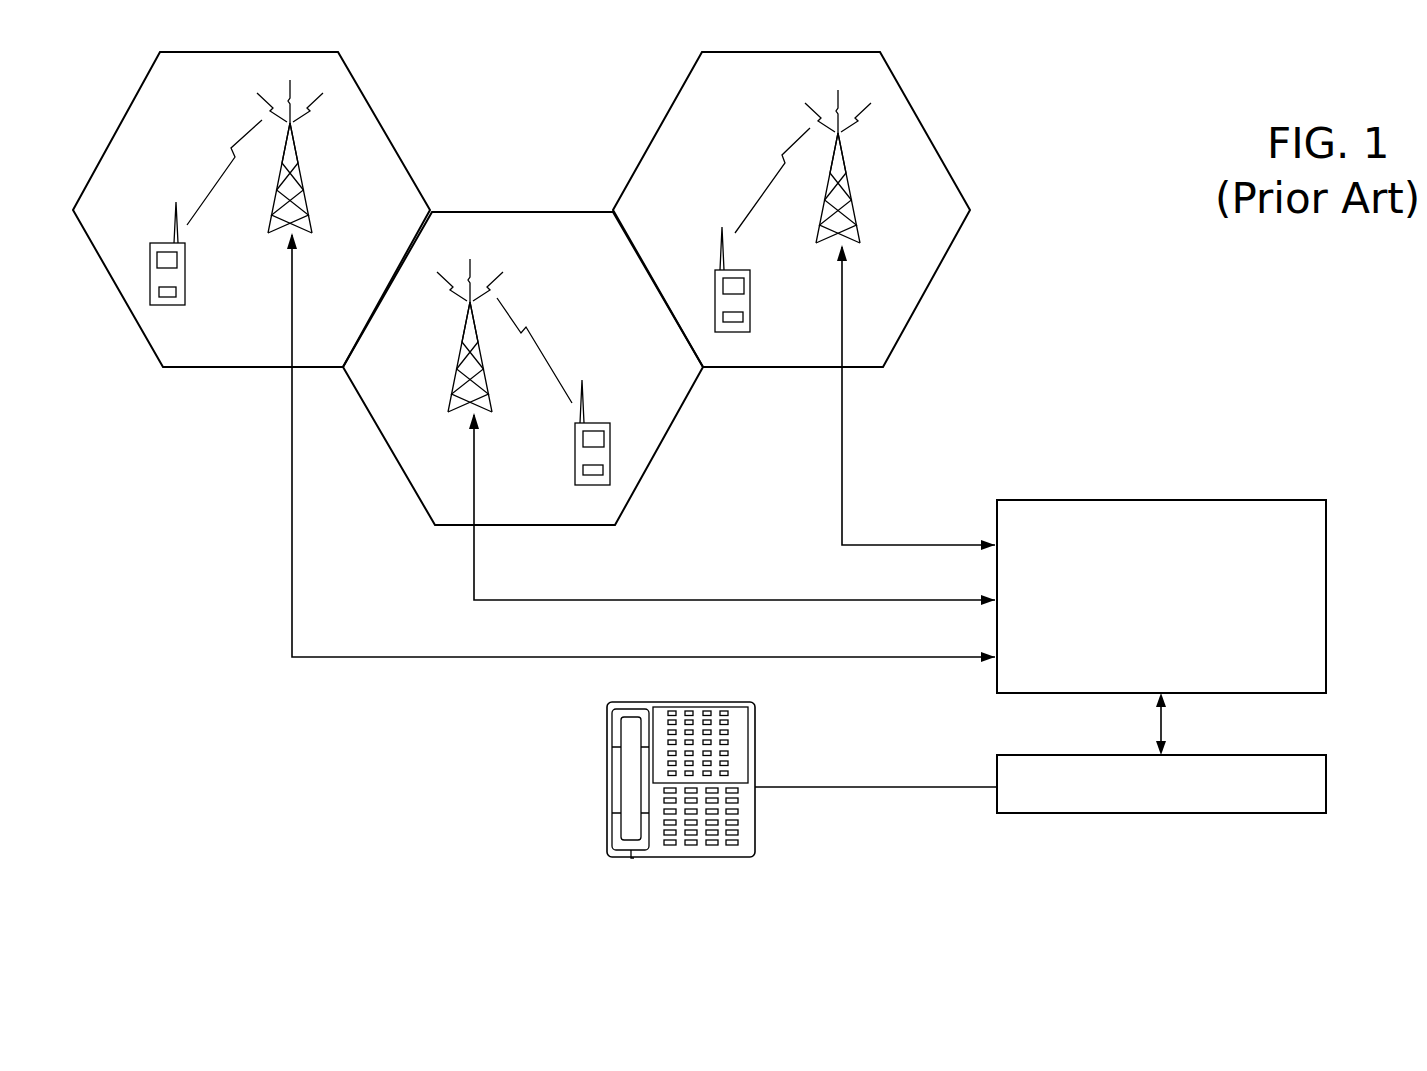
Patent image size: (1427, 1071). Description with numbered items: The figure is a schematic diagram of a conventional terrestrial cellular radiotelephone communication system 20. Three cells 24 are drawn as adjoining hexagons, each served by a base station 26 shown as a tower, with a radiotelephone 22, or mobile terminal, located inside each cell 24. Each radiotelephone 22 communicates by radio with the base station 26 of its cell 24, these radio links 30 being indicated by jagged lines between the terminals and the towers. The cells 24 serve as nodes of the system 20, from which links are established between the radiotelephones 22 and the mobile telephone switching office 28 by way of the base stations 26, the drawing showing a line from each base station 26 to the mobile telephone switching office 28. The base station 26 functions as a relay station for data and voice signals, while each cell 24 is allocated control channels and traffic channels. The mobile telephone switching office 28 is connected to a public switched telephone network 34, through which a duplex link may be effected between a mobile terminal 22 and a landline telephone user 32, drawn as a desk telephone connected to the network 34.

The cellular radiotelephone communication system 20 is at (1030, 165).
The radiotelephone 22 is at (152, 245).
The cell 24 is at (305, 52).
The base station 26 is at (312, 170).
The mobile telephone switching office 28 is at (1281, 500).
The radio link 30 is at (205, 168).
The landline telephone user 32 is at (607, 752).
The public switched telephone network 34 is at (1253, 814).